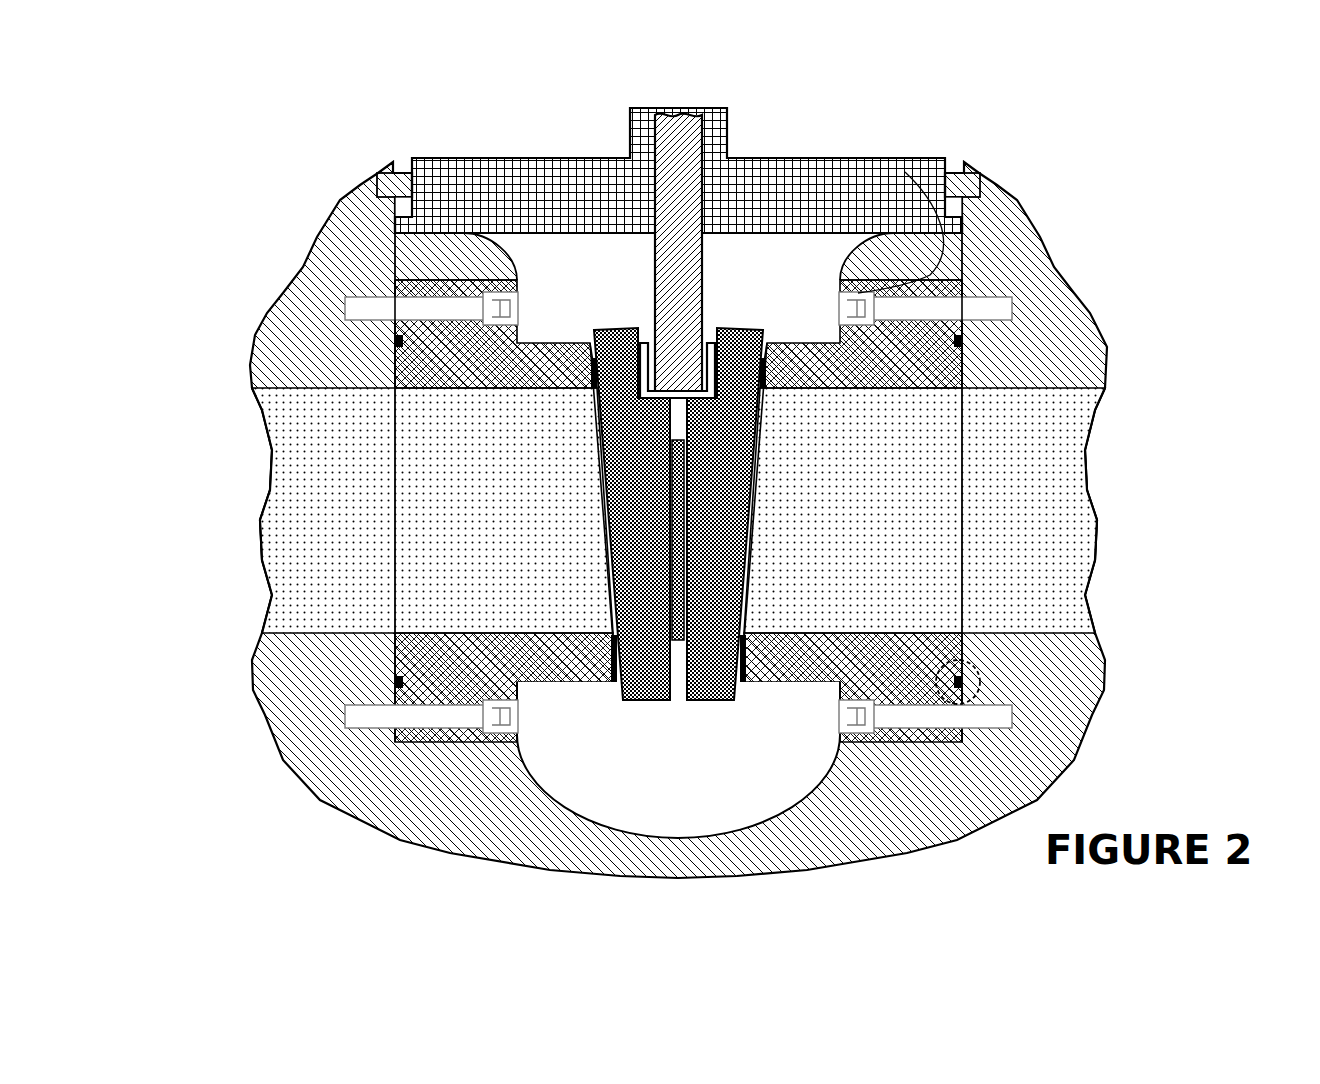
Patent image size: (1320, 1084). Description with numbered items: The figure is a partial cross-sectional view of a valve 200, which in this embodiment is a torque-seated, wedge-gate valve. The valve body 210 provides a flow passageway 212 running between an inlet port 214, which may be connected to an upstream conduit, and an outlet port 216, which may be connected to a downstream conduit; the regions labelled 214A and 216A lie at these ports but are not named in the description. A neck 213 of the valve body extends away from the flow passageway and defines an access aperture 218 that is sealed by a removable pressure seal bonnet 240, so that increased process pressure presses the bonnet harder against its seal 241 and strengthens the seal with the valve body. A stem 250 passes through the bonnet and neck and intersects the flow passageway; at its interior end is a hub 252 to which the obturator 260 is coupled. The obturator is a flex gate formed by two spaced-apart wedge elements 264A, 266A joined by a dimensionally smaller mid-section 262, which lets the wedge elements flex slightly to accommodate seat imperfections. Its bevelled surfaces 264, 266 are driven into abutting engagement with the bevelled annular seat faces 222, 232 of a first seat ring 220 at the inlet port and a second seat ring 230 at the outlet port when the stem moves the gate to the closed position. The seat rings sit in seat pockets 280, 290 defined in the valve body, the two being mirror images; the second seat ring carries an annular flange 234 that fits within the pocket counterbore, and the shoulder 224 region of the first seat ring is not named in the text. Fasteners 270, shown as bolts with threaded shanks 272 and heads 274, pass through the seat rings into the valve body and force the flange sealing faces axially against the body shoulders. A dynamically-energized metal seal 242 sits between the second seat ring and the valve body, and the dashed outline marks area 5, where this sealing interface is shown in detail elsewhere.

The valve 200 is at (404, 137).
The valve body 210 is at (340, 203).
The flow passageway 212 is at (543, 526).
The neck 213 is at (343, 200).
The inlet port 214 is at (420, 513).
The upstream port 214A is at (382, 282).
The outlet port 216 is at (935, 513).
The downstream port 216A is at (975, 282).
The access aperture 218 is at (800, 184).
The first seat ring 220 is at (518, 342).
The annular seat face 222 is at (597, 358).
The upstream seat ring shoulder 224 is at (493, 282).
The second seat ring 230 is at (810, 341).
The annular seat face 232 is at (748, 328).
The annular flange 234 is at (862, 284).
The bonnet 240 is at (905, 172).
The seal 241 is at (983, 165).
The dynamically-energized metal seal 242 is at (972, 683).
The stem 250 is at (702, 270).
The hub 252 is at (620, 328).
The obturator 260 is at (690, 615).
The mid-section 262 is at (677, 615).
The bevelled surface 264 is at (610, 550).
The wedge element 264A is at (673, 617).
The bevelled surface 266 is at (747, 550).
The wedge element 266A is at (684, 617).
The fastener 270 is at (345, 307).
The threaded shank 272 is at (977, 318).
The head 274 is at (930, 275).
The seat pocket 280 is at (393, 376).
The seat pocket 290 is at (957, 375).
The area 5 is at (978, 665).